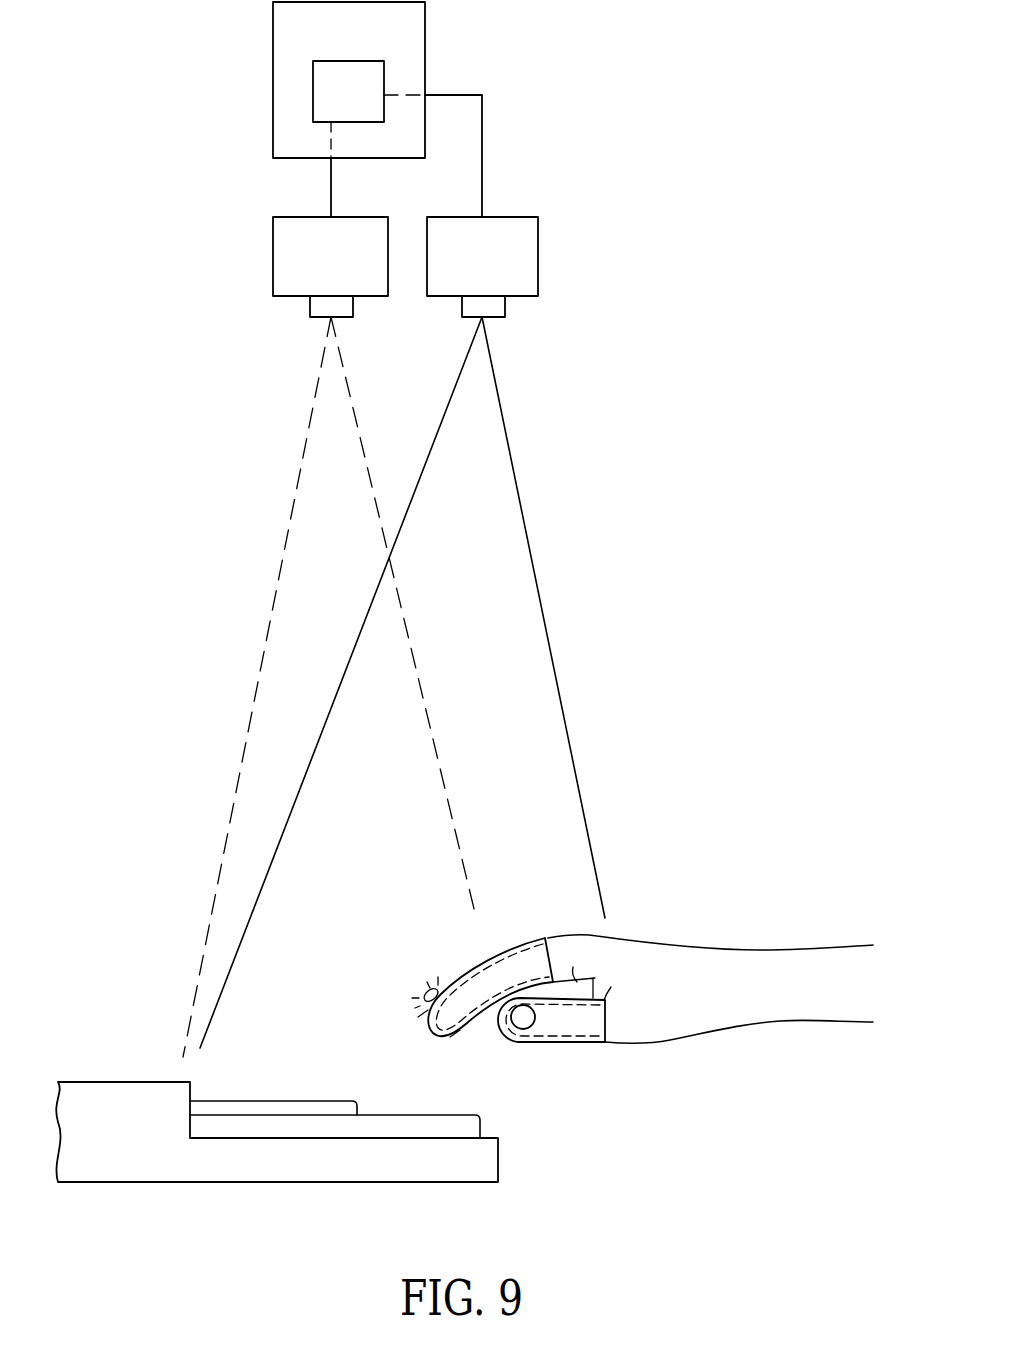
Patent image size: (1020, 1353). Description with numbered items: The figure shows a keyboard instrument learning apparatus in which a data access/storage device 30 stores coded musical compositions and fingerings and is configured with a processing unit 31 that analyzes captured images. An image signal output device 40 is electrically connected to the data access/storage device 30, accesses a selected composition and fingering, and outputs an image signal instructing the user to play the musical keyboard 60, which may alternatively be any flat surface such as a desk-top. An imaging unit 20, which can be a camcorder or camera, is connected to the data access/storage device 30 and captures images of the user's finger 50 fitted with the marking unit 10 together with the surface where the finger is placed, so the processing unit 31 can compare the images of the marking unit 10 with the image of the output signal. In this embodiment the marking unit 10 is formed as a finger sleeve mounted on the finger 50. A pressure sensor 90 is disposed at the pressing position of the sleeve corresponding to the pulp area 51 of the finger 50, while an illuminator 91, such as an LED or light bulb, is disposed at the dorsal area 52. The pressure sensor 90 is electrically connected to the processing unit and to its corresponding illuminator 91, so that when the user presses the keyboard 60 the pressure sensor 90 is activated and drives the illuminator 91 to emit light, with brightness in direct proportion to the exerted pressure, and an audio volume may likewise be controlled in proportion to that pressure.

The marking unit 10 is at (612, 979).
The imaging unit 20 is at (540, 258).
The data access/storage device 30 is at (277, 73).
The processing unit 31 is at (350, 61).
The image signal output device 40 is at (277, 255).
The finger 50 is at (463, 959).
The pulp area 51 is at (455, 1037).
The dorsal area 52 is at (413, 1019).
The musical keyboard 60 is at (307, 1115).
The pressure sensor 90 is at (462, 1028).
The illuminator 91 is at (425, 993).